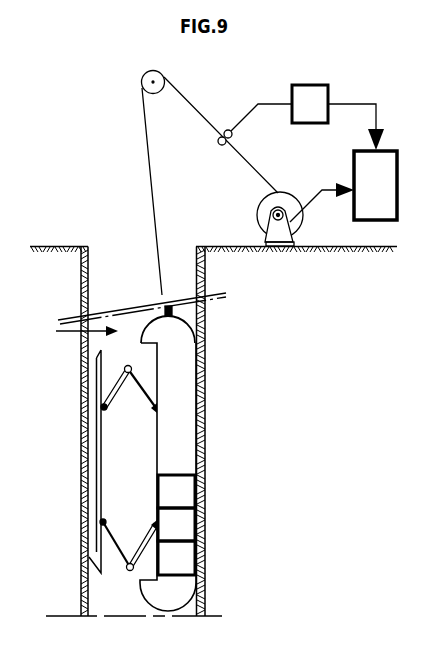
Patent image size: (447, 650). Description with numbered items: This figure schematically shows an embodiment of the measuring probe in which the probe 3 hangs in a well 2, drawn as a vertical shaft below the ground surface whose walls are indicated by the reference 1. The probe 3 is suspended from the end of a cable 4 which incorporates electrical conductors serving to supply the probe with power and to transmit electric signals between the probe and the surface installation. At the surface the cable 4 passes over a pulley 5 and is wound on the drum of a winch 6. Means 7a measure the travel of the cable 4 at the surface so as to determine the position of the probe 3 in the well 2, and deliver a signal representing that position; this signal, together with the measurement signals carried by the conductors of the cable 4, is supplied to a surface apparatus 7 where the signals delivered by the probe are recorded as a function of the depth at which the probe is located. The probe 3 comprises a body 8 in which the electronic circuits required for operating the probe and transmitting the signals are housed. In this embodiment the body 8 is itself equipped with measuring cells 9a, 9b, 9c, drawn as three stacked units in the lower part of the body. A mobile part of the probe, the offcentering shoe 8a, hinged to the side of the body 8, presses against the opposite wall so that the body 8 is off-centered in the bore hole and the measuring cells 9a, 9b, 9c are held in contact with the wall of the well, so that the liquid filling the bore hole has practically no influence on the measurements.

The shaft 1 is at (201, 371).
The well 2 is at (191, 287).
The probe 3 is at (78, 333).
The cable 4 is at (152, 220).
The pulley 5 is at (143, 77).
The winch 6 is at (262, 206).
The apparatus 7 is at (343, 186).
The means for measuring cable travel 7a is at (301, 117).
The body 8 is at (178, 350).
The offcentering shoe 8a is at (96, 430).
The measuring cell 9a is at (176, 491).
The measuring cell 9b is at (176, 524).
The measuring cell 9c is at (176, 558).